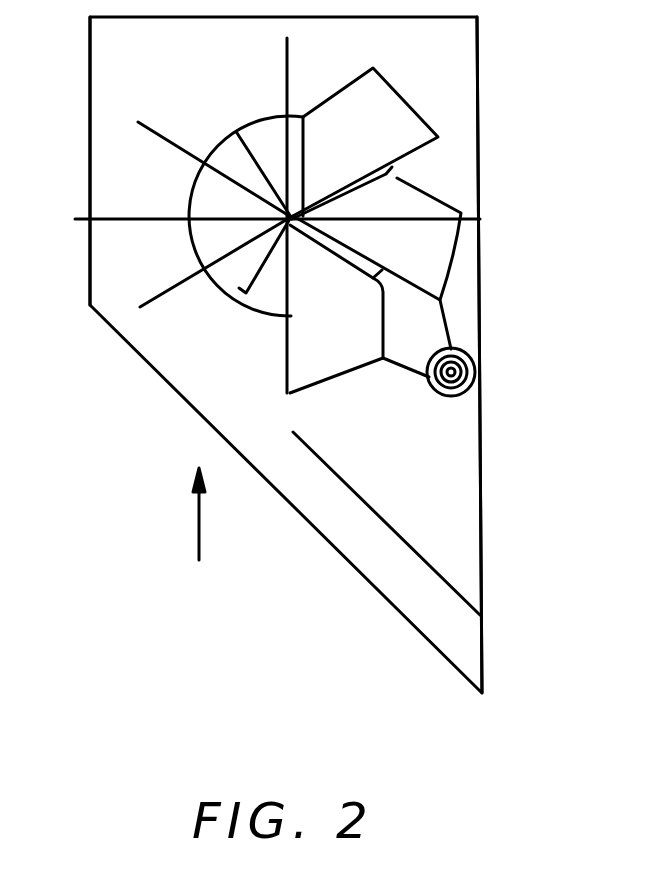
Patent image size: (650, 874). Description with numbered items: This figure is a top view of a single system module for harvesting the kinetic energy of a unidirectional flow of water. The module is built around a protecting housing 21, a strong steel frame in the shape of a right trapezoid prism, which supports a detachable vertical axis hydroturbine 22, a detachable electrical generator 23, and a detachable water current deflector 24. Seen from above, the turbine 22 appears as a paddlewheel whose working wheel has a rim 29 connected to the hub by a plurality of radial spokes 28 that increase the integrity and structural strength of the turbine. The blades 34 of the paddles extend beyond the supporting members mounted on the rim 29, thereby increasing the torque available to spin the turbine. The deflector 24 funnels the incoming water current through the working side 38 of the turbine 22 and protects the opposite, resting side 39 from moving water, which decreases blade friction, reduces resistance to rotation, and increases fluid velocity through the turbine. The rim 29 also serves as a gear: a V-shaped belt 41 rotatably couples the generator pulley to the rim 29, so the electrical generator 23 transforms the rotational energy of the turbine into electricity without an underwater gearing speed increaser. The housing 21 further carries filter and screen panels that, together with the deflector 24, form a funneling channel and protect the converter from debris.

The protecting housing 21 is at (84, 219).
The vertical axis hydroturbine 22 is at (213, 190).
The electrical generator 23 is at (476, 371).
The water current deflector 24 is at (446, 573).
The radial spokes 28 is at (258, 263).
The rim 29 is at (190, 203).
The blades 34 is at (410, 130).
The working side 38 is at (135, 283).
The resting side 39 is at (425, 468).
The belt 41 is at (452, 333).